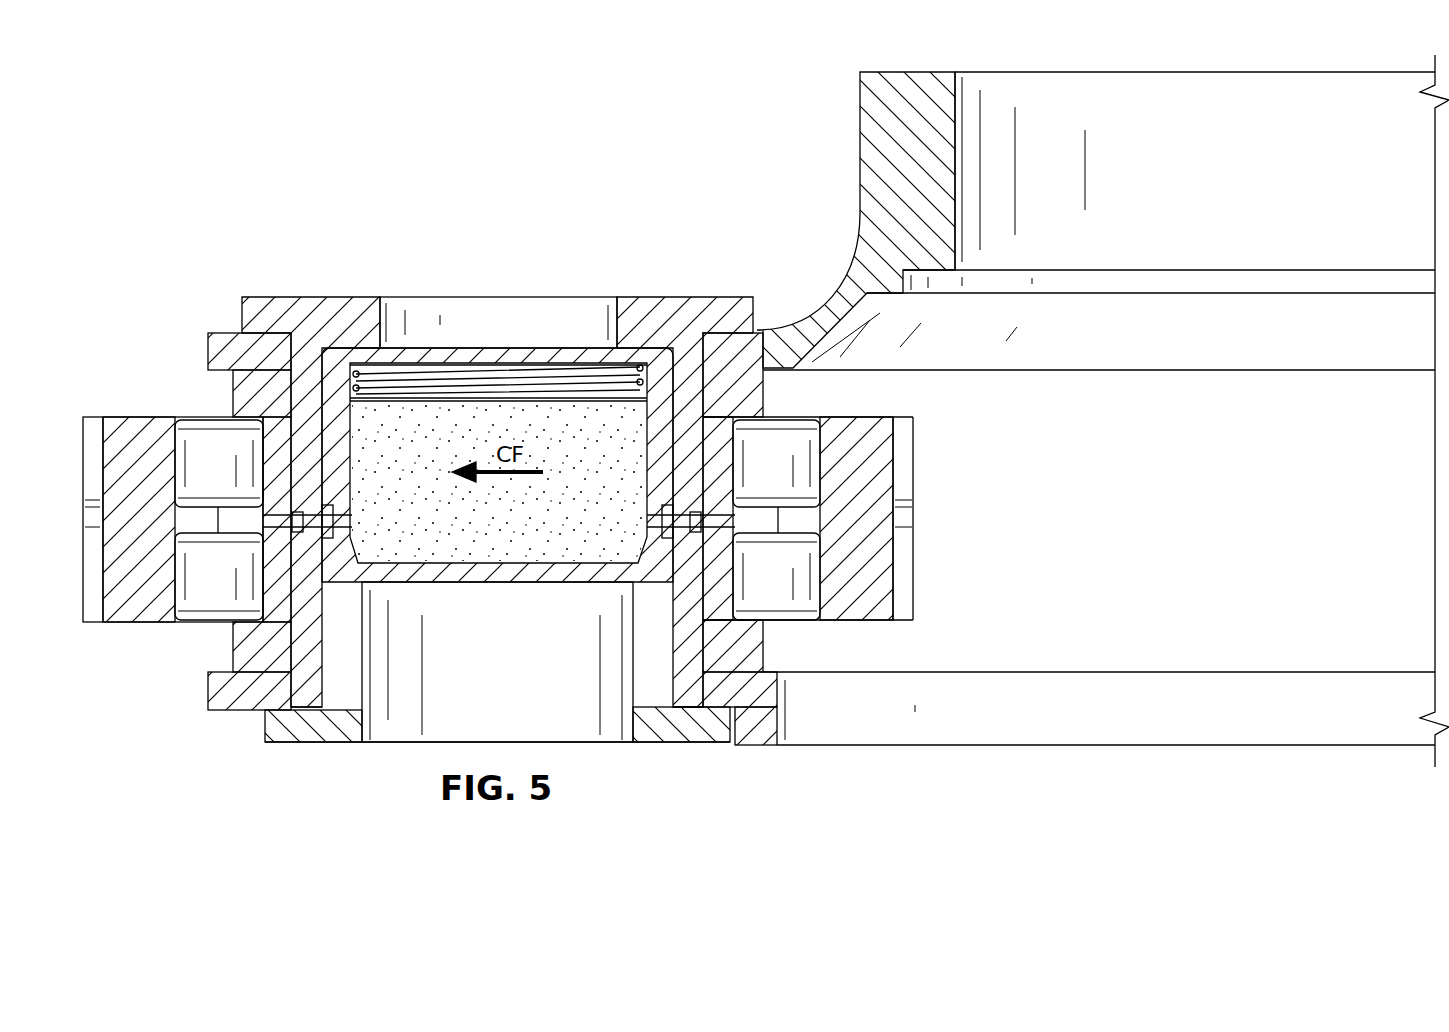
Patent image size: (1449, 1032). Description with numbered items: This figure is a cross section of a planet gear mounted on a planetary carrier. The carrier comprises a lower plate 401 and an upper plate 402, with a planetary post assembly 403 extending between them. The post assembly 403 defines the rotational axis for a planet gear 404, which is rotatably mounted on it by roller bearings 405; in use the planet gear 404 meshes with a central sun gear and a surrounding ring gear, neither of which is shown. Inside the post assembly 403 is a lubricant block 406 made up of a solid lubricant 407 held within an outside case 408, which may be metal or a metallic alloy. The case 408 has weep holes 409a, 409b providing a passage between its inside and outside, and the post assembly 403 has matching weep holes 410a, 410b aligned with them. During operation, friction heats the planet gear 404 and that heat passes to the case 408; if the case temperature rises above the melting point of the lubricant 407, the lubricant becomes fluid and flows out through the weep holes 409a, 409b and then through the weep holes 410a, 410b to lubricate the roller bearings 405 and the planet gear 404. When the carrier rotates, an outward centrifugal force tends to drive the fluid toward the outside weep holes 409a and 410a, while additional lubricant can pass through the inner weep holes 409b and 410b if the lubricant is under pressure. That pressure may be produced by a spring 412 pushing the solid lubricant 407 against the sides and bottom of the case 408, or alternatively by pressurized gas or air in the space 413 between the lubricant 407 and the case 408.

The lower plate 401 is at (764, 735).
The upper plate 402 is at (868, 147).
The planetary post assembly 403 is at (330, 307).
The planet gear 404 is at (880, 552).
The roller bearings 405 is at (193, 440).
The lubricant block 406 is at (582, 336).
The solid lubricant 407 is at (513, 550).
The case 408 is at (483, 357).
The outside weep hole 409a is at (342, 519).
The inner weep hole 409b is at (656, 519).
The outside weep hole 410a is at (270, 516).
The inner weep hole 410b is at (728, 516).
The spring 412 is at (430, 382).
The space 413 is at (533, 368).